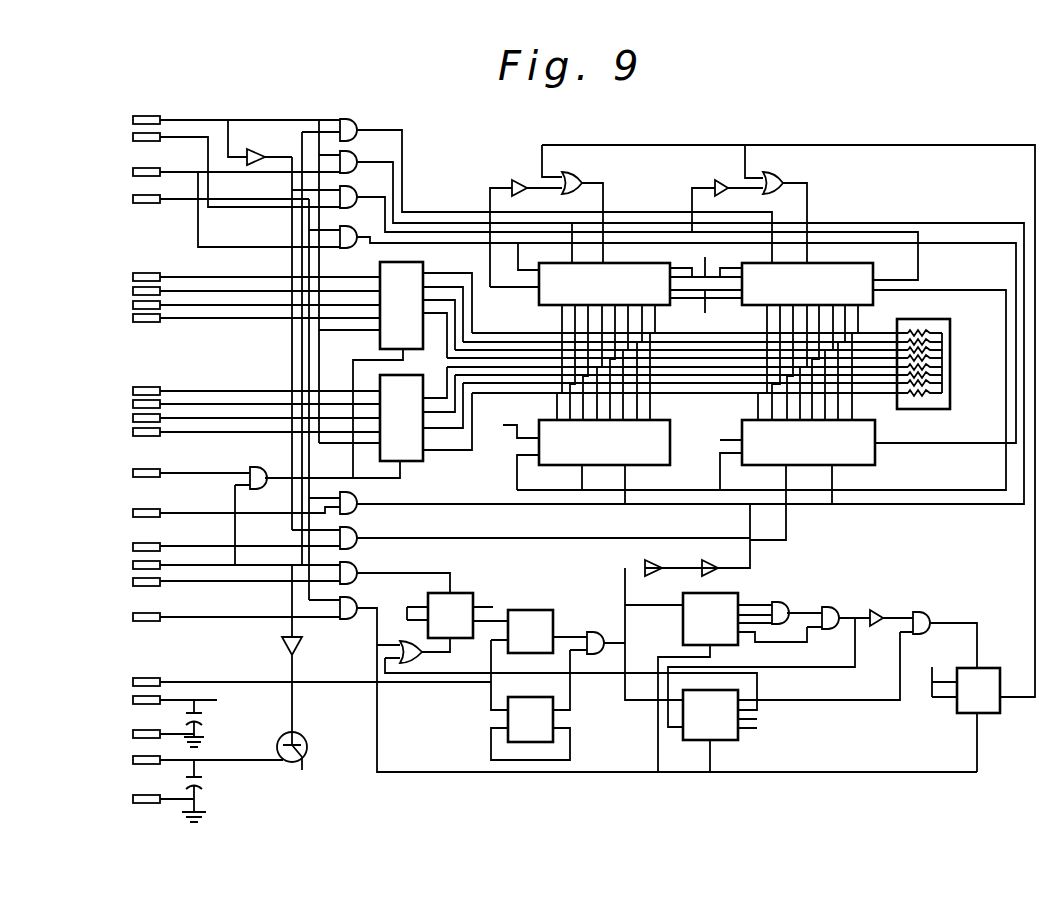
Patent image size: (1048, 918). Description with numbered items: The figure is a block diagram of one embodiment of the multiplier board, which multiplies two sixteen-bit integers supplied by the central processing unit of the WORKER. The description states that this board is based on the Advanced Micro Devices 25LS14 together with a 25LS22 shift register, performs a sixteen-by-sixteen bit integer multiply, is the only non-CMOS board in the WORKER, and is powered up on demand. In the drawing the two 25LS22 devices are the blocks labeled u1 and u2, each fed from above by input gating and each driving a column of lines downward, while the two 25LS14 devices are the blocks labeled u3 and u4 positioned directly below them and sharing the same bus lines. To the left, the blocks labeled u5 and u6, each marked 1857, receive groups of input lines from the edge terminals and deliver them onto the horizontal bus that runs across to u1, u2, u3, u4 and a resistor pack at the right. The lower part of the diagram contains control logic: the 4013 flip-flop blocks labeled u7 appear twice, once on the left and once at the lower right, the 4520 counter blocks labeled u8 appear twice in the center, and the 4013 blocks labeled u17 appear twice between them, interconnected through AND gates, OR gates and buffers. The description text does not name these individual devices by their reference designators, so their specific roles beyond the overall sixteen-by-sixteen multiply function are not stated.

The 25LS22 register u1 is at (604, 284).
The 25LS22 register u2 is at (807, 284).
The 25LS14 register u3 is at (604, 442).
The 25LS14 register u4 is at (808, 442).
The 1857 driver u5 is at (401, 305).
The 1857 driver u6 is at (401, 418).
The 4013 flip-flop u7 is at (714, 653).
The 4520 counter u8 is at (710, 666).
The 4013 flip-flop u17 is at (530, 676).